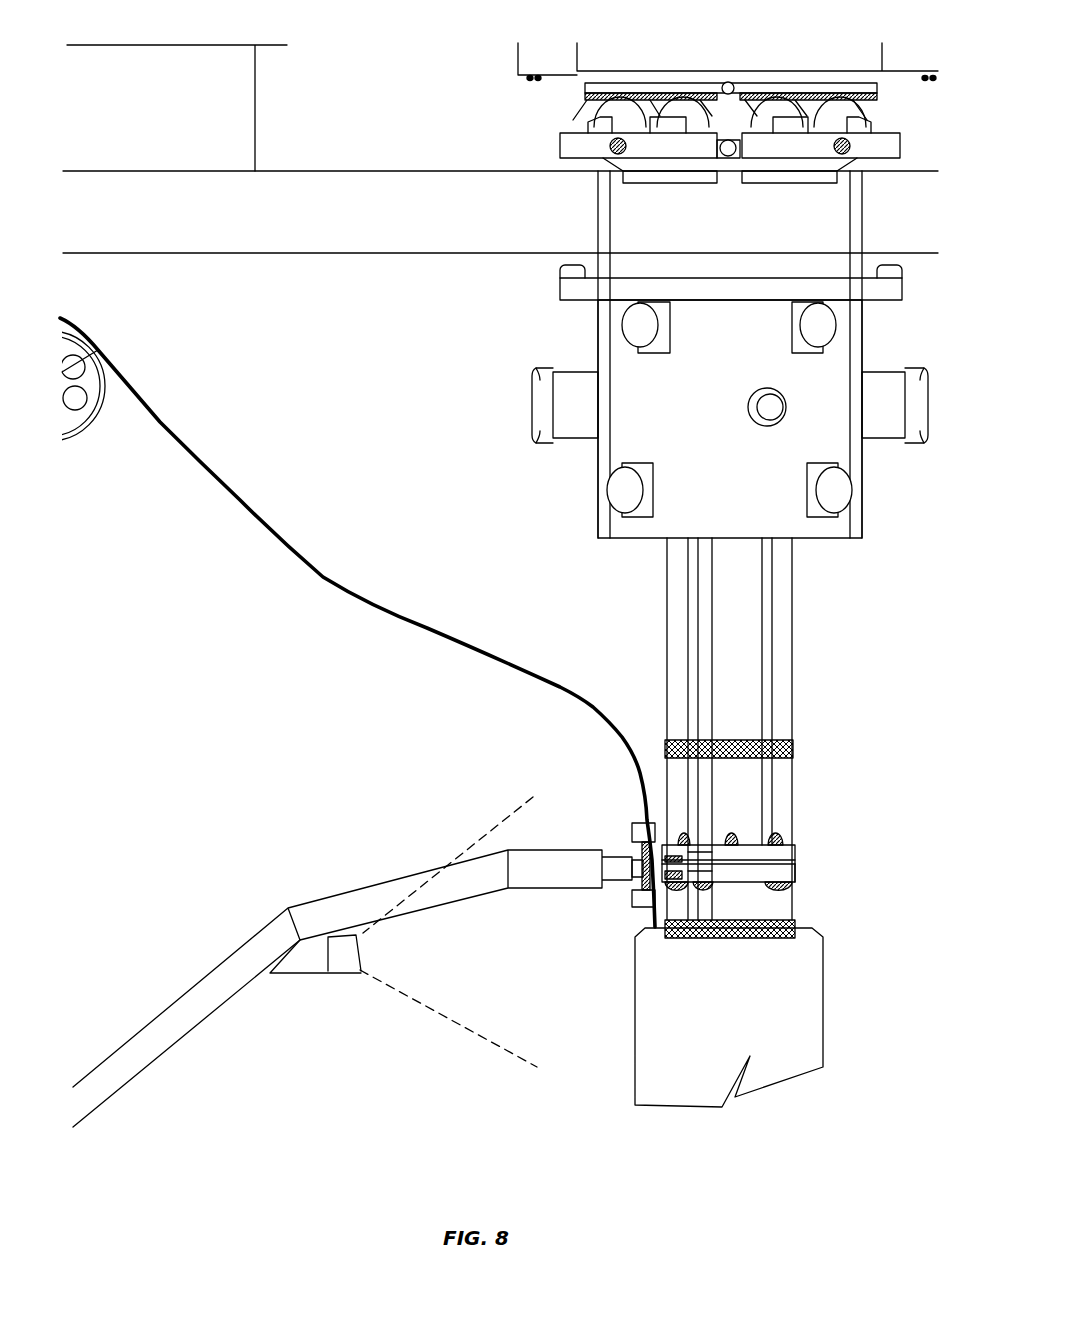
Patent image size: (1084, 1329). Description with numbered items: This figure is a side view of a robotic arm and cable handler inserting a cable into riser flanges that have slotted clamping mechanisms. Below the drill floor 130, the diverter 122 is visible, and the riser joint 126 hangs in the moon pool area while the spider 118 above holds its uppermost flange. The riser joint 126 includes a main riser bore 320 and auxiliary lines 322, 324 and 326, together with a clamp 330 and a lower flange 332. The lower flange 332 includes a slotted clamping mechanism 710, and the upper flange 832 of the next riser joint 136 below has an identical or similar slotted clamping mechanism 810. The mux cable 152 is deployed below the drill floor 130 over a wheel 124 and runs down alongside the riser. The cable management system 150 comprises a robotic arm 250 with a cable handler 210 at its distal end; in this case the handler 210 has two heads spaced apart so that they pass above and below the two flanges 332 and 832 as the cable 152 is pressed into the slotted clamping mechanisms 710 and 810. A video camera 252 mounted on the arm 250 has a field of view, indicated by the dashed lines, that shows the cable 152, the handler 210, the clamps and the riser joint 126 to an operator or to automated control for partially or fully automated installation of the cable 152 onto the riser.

The spider 118 is at (585, 87).
The diverter 122 is at (843, 520).
The wheel 124 is at (75, 440).
The riser joint 126 is at (793, 597).
The drill floor 130 is at (335, 243).
The riser joint 136 is at (827, 1023).
The cable management system 150 is at (276, 821).
The mux cable 152 is at (323, 577).
The cable handler 210 is at (631, 818).
The robotic arm 250 is at (217, 993).
The video camera 252 is at (338, 960).
The main riser bore 320 is at (752, 668).
The auxiliary line 322 is at (785, 718).
The auxiliary line 324 is at (677, 612).
The auxiliary line 326 is at (702, 580).
The clamp 330 is at (795, 748).
The lower flange 332 is at (785, 853).
The slotted clamping mechanism 710 is at (692, 852).
The slotted clamping mechanism 810 is at (692, 872).
The upper flange 832 is at (787, 870).